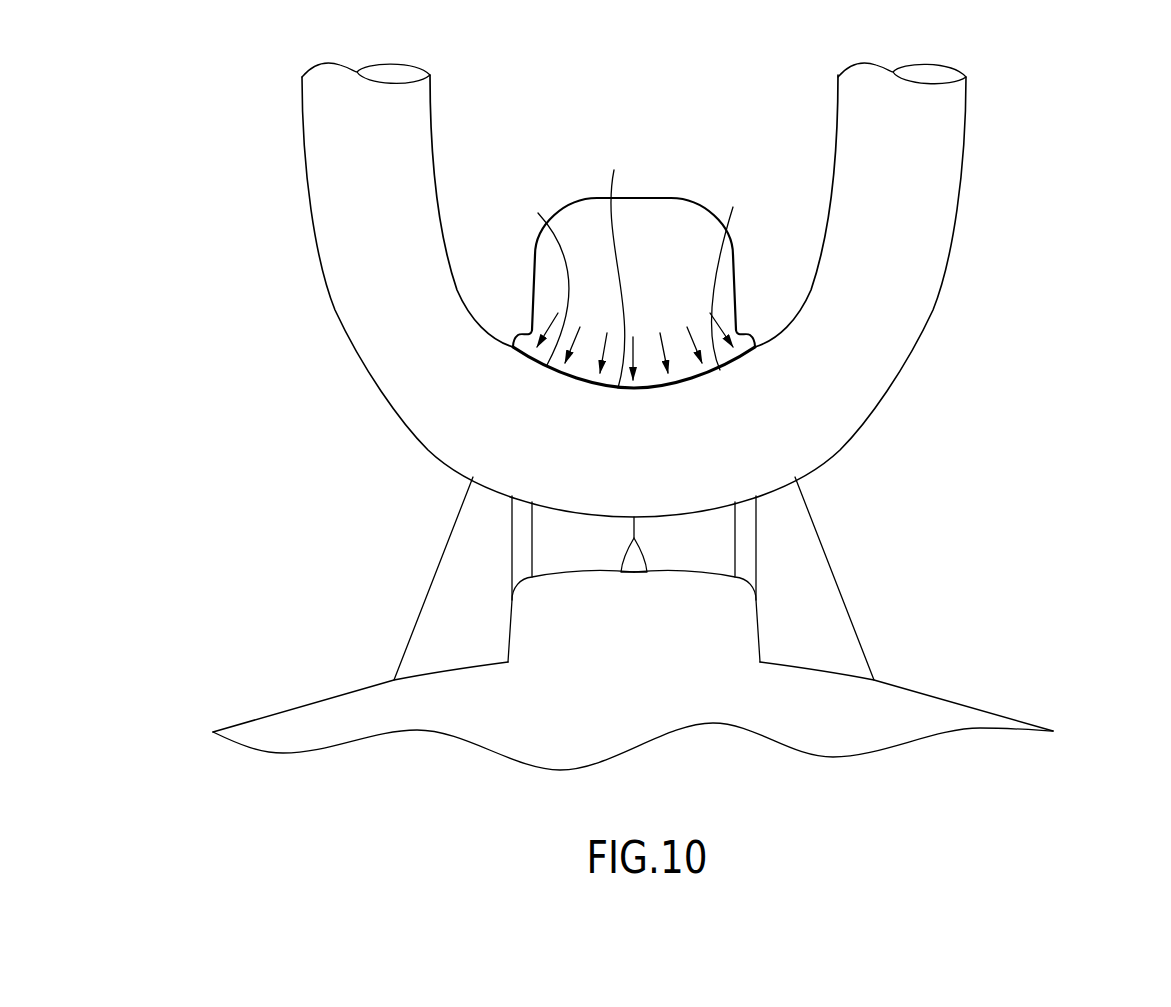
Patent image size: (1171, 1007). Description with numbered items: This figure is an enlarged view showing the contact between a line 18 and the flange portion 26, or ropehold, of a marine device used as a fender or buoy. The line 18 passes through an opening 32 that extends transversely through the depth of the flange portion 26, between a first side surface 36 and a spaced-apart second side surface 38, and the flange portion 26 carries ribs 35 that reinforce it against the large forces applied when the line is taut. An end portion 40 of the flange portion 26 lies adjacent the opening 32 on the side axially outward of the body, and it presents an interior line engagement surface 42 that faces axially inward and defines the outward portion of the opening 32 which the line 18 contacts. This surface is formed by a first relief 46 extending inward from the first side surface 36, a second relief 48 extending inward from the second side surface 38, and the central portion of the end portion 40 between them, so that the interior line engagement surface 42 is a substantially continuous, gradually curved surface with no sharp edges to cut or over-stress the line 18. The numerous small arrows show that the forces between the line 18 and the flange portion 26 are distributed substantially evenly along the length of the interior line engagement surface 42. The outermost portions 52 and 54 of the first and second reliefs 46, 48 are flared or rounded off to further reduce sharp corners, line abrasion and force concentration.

The line 18 is at (935, 232).
The flange portion 26 is at (1022, 437).
The opening 32 is at (565, 538).
The ribs 35 is at (803, 547).
The first side surface 36 is at (508, 637).
The second side surface 38 is at (760, 632).
The end portion 40 is at (653, 223).
The interior line engagement surface 42 is at (615, 262).
The first relief 46 is at (534, 278).
The second relief 48 is at (732, 270).
The outermost portion of the first relief 52 is at (515, 343).
The outermost portion of the second relief 54 is at (750, 335).